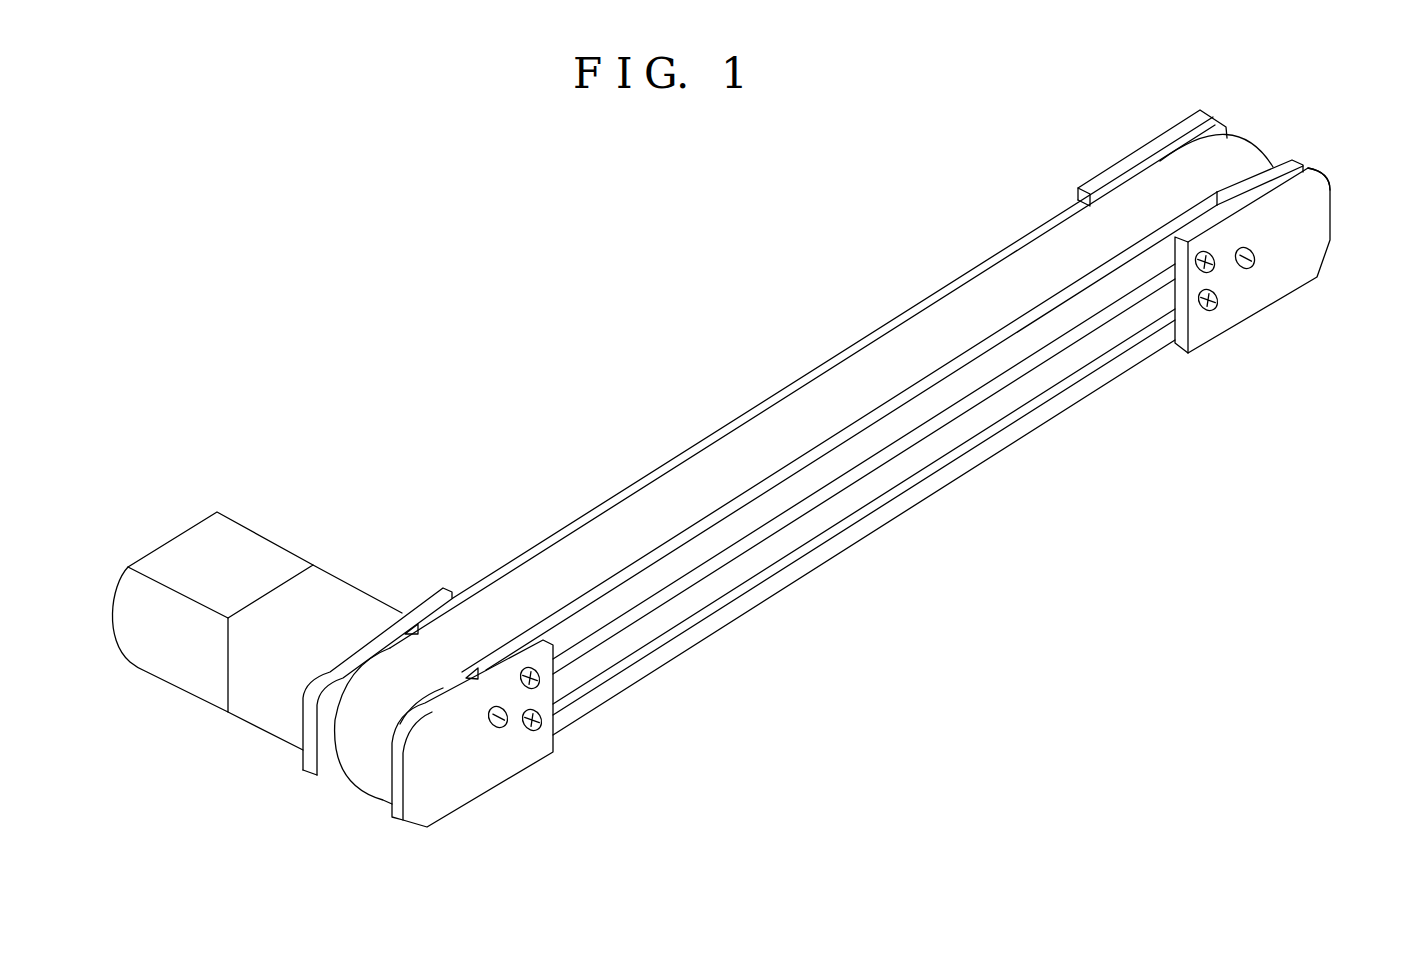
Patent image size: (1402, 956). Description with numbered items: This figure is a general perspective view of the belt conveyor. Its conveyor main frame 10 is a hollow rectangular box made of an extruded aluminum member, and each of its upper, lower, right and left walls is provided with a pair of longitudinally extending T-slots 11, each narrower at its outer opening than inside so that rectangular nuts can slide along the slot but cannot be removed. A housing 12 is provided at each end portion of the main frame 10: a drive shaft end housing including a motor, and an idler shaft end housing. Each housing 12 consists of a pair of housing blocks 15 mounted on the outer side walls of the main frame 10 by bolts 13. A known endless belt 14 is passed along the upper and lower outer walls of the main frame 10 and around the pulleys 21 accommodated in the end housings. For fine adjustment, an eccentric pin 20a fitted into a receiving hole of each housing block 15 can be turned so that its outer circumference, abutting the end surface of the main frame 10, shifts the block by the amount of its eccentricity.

The conveyor main frame 10 is at (864, 548).
The T-slots 11 is at (1052, 352).
The housing 12 is at (1290, 150).
The bolts 13 is at (1212, 270).
The endless belt 14 is at (718, 462).
The housing blocks 15 is at (1100, 165).
The eccentric pin 20a is at (1256, 258).
The pulleys 21 is at (1283, 160).